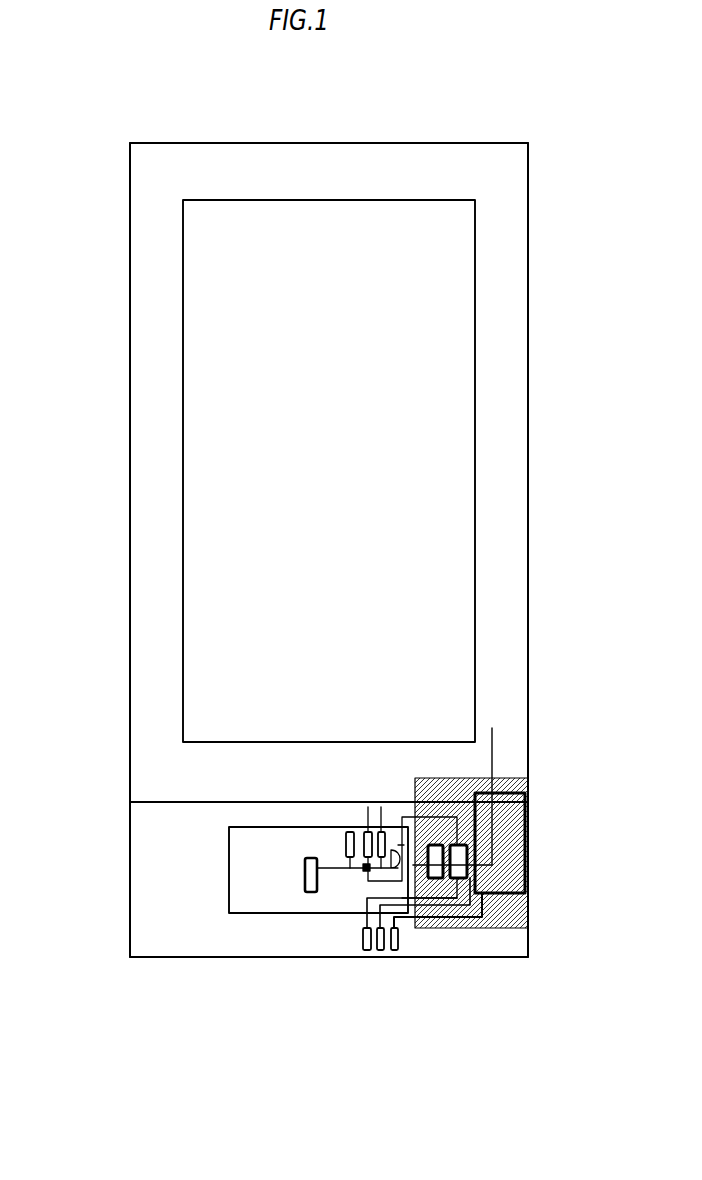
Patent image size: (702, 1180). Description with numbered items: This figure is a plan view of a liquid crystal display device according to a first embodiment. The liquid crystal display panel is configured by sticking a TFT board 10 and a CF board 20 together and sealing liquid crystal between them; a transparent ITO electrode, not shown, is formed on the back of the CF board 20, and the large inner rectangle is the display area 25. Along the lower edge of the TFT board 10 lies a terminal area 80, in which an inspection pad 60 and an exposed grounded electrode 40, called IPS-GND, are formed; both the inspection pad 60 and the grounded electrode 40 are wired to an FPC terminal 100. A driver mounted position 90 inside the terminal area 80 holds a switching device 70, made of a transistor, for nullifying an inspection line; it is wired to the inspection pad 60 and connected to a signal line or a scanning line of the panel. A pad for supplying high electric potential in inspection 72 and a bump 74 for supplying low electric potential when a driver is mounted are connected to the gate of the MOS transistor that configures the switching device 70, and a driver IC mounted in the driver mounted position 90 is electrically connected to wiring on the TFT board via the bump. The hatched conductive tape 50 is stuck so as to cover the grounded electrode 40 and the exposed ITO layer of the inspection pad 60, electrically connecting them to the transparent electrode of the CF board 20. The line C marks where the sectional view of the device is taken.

The TFT board 10 is at (278, 550).
The CF board 20 is at (292, 472).
The display area 25 is at (329, 404).
The grounded electrode 40 is at (530, 905).
The conductive tape 50 is at (470, 799).
The inspection pad 60 is at (452, 947).
The switching device for nullifying an inspection line 70 is at (383, 949).
The pad for supplying high electric potential in inspection 72 is at (314, 970).
The bump for supplying low electric potential 74 is at (321, 776).
The terminal area 80 is at (313, 952).
The driver mounted position 90 is at (293, 964).
The FPC terminal 100 is at (416, 980).
The line C-C' C is at (496, 775).